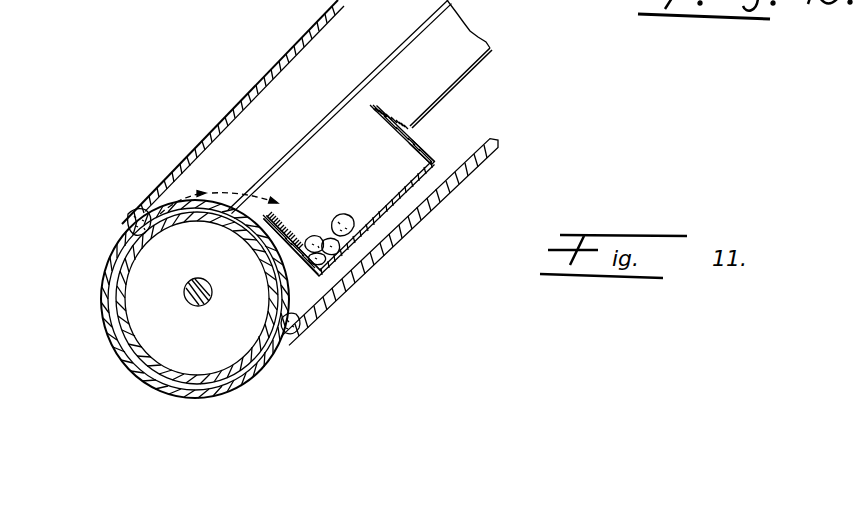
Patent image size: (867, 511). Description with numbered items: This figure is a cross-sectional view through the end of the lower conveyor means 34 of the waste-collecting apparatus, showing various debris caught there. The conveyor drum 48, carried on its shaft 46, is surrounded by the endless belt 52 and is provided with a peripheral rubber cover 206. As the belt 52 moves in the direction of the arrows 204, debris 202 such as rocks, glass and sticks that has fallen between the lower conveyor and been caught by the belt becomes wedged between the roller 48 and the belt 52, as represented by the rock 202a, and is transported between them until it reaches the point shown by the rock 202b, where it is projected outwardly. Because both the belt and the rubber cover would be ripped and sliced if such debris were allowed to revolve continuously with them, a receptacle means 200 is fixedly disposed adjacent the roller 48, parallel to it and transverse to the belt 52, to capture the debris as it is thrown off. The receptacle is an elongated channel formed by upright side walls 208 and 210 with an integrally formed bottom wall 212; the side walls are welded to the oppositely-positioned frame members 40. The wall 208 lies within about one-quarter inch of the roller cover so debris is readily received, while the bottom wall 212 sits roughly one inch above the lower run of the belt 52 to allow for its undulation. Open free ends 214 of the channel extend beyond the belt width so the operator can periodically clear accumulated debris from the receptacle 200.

The lower conveyor means 34 is at (302, 29).
The side-channel member 40 is at (468, 40).
The shaft 46 is at (200, 306).
The conveyor drum 48 is at (123, 355).
The endless belt 52 is at (480, 165).
The receptacle means 200 is at (406, 200).
The debris 202 is at (342, 213).
The rock 202a is at (300, 330).
The rock 202b is at (135, 212).
The arrows 204 is at (267, 64).
The peripheral rubber cover 206 is at (215, 378).
The upright side wall 208 is at (290, 210).
The upright side wall 210 is at (377, 106).
The bottom wall 212 is at (380, 222).
The open free end 214 is at (397, 173).